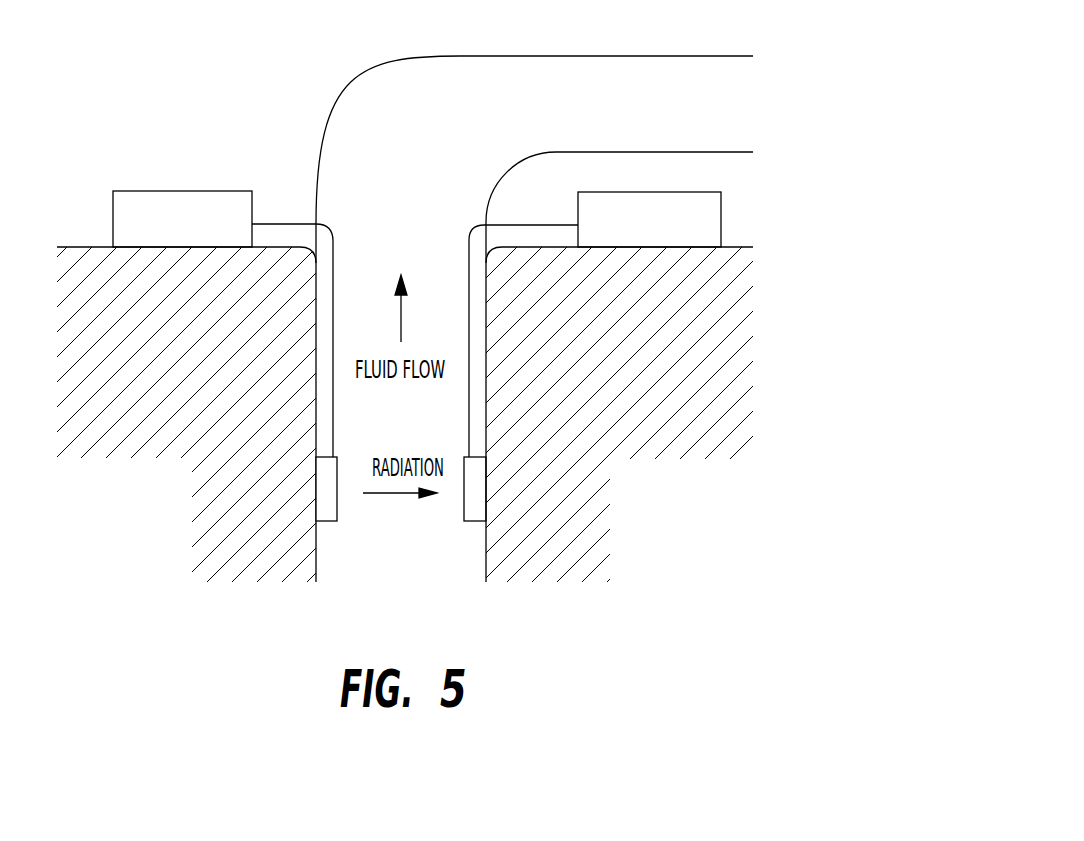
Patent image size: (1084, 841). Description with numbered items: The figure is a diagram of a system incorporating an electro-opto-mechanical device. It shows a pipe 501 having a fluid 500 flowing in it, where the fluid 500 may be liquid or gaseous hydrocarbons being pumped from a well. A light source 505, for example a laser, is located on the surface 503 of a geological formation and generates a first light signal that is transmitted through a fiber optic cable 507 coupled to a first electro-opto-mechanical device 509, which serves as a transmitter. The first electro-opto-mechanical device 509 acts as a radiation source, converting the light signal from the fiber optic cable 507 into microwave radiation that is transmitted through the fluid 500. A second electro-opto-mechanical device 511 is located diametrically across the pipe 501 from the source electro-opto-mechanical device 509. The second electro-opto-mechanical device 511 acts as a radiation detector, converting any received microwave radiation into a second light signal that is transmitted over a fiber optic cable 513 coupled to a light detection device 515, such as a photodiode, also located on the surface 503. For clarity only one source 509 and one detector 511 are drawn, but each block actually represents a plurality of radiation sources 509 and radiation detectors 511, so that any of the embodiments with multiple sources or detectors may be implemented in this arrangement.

The fluid 500 is at (663, 66).
The pipe 501 is at (403, 64).
The surface 503 is at (83, 246).
The light source 505 is at (183, 190).
The fiber optic cable 507 is at (290, 222).
The first electro-opto-mechanical device 509 is at (327, 522).
The second electro-opto-mechanical device 511 is at (476, 523).
The fiber optic cable 513 is at (548, 222).
The light detection device 515 is at (650, 190).